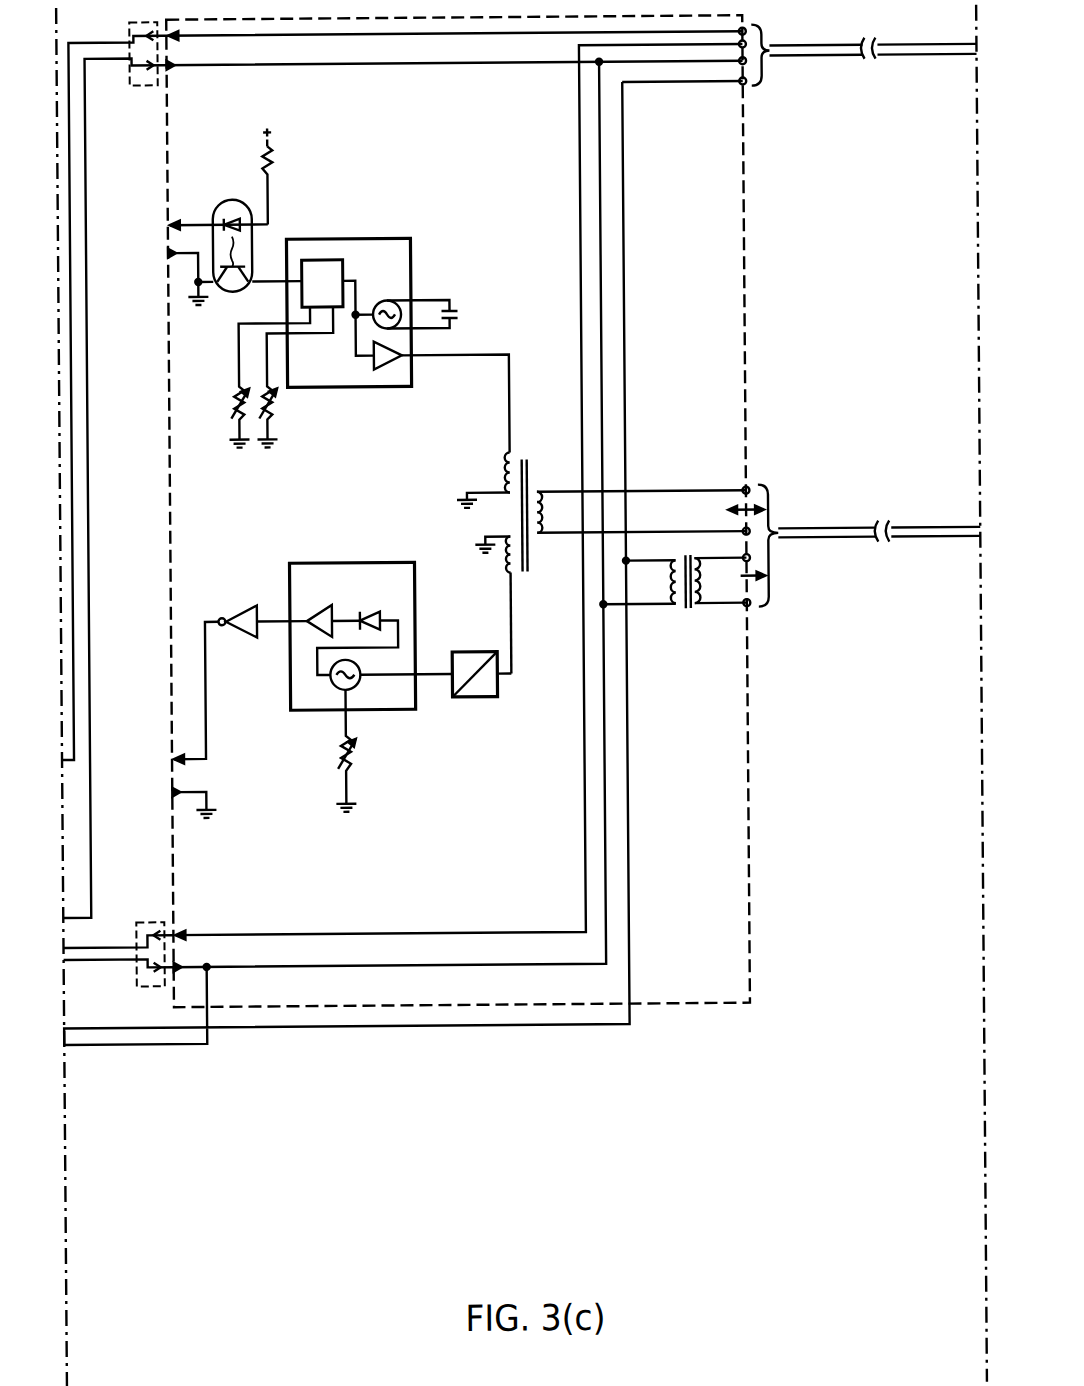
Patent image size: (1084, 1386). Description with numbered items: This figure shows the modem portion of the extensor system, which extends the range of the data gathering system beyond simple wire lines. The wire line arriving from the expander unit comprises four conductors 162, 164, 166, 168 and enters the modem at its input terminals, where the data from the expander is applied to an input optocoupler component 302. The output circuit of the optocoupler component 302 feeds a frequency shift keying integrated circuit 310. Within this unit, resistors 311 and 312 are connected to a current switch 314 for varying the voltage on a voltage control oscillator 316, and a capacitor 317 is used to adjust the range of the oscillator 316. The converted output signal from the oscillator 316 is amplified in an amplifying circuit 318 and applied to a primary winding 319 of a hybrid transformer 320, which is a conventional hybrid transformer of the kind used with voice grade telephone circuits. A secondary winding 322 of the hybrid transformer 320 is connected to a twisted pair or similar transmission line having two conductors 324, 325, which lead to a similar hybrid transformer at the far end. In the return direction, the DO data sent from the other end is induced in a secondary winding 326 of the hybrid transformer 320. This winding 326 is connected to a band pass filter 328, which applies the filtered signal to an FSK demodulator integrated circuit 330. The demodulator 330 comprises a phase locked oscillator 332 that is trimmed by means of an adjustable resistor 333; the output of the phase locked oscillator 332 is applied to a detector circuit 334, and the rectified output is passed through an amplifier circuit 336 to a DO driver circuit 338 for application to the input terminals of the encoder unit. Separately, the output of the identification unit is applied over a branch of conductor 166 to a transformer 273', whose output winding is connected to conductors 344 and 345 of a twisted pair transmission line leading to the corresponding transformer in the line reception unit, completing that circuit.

The conductor 162 is at (481, 34).
The conductor 164 is at (511, 64).
The conductor 166 is at (676, 84).
The conductor 168 is at (633, 68).
The input optocoupler component 302 is at (234, 216).
The frequency shift keying integrated circuit 310 is at (413, 283).
The resistor 311 is at (236, 399).
The resistor 312 is at (270, 405).
The current switch 314 is at (345, 267).
The voltage control oscillator 316 is at (398, 326).
The capacitor 317 is at (457, 311).
The amplifying circuit 318 is at (375, 363).
The primary winding 319 is at (508, 469).
The hybrid transformer 320 is at (521, 511).
The secondary winding 322 is at (542, 513).
The conductor 324 is at (641, 492).
The conductor 325 is at (644, 533).
The secondary winding 326 is at (514, 546).
The band pass filter 328 is at (495, 653).
The FSK demodulator integrated circuit 330 is at (336, 562).
The phase locked oscillator 332 is at (358, 682).
The adjustable resistor 333 is at (356, 757).
The detector circuit 334 is at (370, 610).
The amplifier circuit 336 is at (316, 606).
The DO driver circuit 338 is at (238, 606).
The conductor 344 is at (736, 574).
The conductor 345 is at (707, 606).
The transformer 273' is at (675, 569).